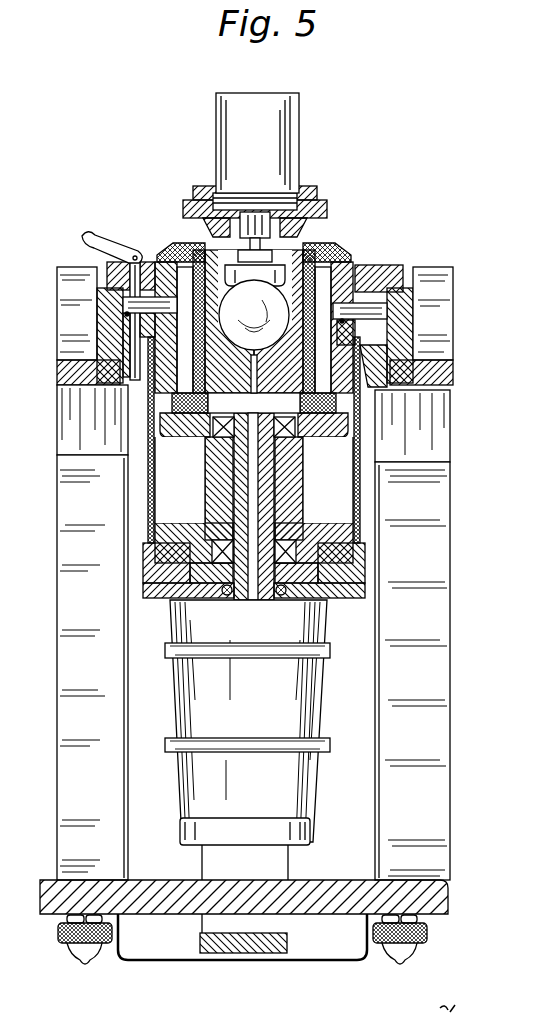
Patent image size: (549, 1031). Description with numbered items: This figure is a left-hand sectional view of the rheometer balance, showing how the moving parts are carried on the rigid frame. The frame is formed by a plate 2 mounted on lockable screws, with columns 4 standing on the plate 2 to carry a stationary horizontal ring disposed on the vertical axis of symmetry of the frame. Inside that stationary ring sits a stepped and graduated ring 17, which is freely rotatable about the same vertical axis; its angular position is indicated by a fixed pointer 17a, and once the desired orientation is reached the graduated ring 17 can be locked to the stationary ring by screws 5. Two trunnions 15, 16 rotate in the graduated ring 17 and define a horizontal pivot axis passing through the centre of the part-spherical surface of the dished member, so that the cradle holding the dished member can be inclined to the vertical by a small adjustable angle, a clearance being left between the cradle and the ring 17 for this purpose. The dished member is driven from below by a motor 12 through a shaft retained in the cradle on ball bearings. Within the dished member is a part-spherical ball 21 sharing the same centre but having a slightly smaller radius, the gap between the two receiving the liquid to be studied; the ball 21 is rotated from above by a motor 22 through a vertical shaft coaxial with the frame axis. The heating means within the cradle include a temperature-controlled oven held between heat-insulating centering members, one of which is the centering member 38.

The plate 2 is at (158, 888).
The columns 4 is at (253, 632).
The screws 5 is at (92, 237).
The motor 12 is at (247, 740).
The trunnion 15 is at (126, 305).
The trunnion 16 is at (362, 305).
The stepped and graduated ring 17 is at (393, 275).
The fixed pointer 17a is at (104, 270).
The part-spherical ball 21 is at (254, 315).
The motor 22 is at (257, 143).
The centering member 38 is at (337, 250).